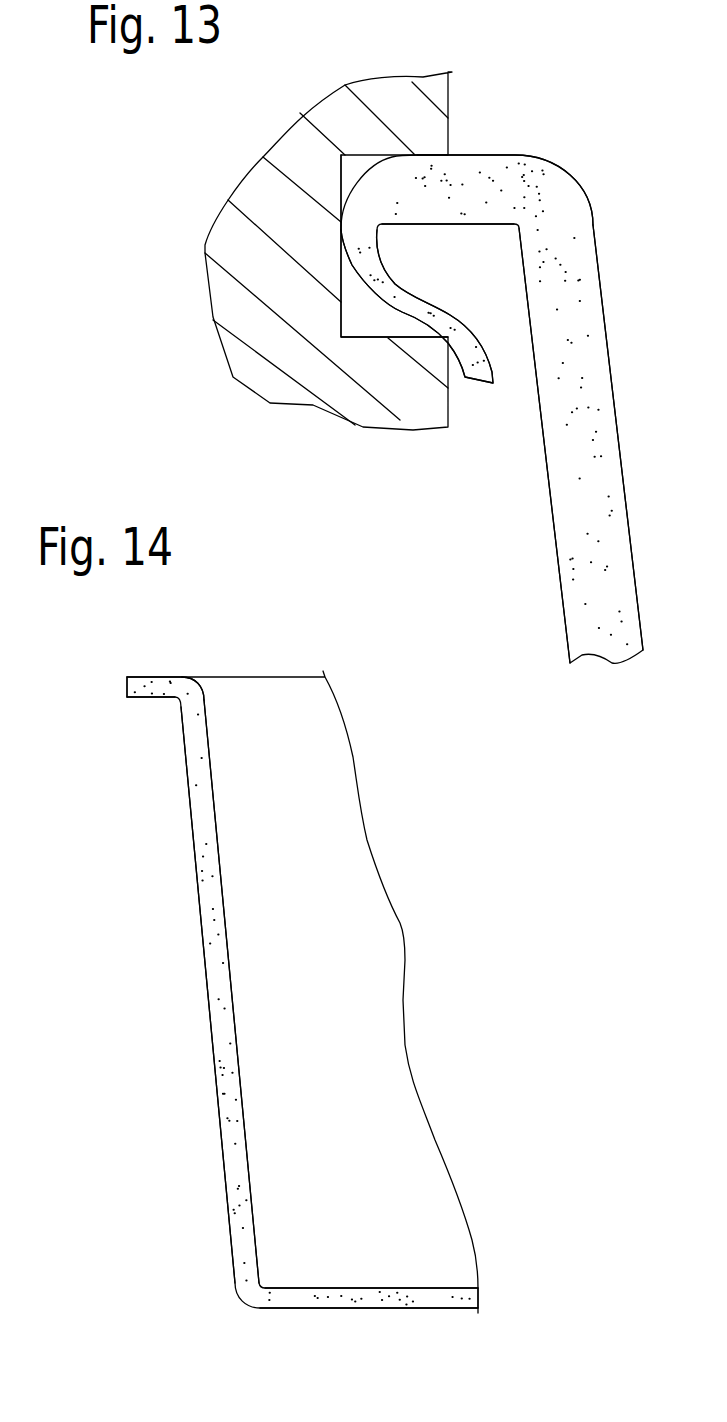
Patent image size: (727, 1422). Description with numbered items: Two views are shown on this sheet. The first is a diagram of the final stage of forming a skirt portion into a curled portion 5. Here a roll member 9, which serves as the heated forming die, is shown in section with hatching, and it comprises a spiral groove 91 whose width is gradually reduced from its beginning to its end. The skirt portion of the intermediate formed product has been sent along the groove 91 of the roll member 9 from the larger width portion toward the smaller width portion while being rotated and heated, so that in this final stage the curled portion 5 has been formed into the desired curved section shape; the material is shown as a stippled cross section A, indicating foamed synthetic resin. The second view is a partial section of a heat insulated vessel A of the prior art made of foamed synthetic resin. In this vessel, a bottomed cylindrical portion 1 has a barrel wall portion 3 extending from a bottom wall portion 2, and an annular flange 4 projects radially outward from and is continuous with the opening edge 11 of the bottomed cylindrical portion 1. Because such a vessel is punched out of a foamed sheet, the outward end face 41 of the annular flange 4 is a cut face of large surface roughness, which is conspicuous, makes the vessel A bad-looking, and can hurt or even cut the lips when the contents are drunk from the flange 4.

In FIG. 14, the bottomed cylindrical portion 1 is at (189, 910).
In FIG. 14, the bottom wall portion 2 is at (408, 1305).
In FIG. 13, the barrel wall portion 3 is at (565, 552).
In FIG. 14, the barrel wall portion 3 is at (212, 990).
In FIG. 13, the annular flange 4 is at (475, 157).
In FIG. 14, the annular flange 4 is at (138, 680).
In FIG. 13, the curled portion 5 is at (378, 295).
In FIG. 13, the roll member 9 is at (283, 137).
In FIG. 14, the opening edge 11 is at (197, 698).
In FIG. 14, the outward end face 41 is at (127, 685).
In FIG. 13, the spiral groove 91 is at (383, 325).
In FIG. 13, the heat insulated vessel A is at (550, 157).
In FIG. 14, the heat insulated vessel A is at (350, 682).